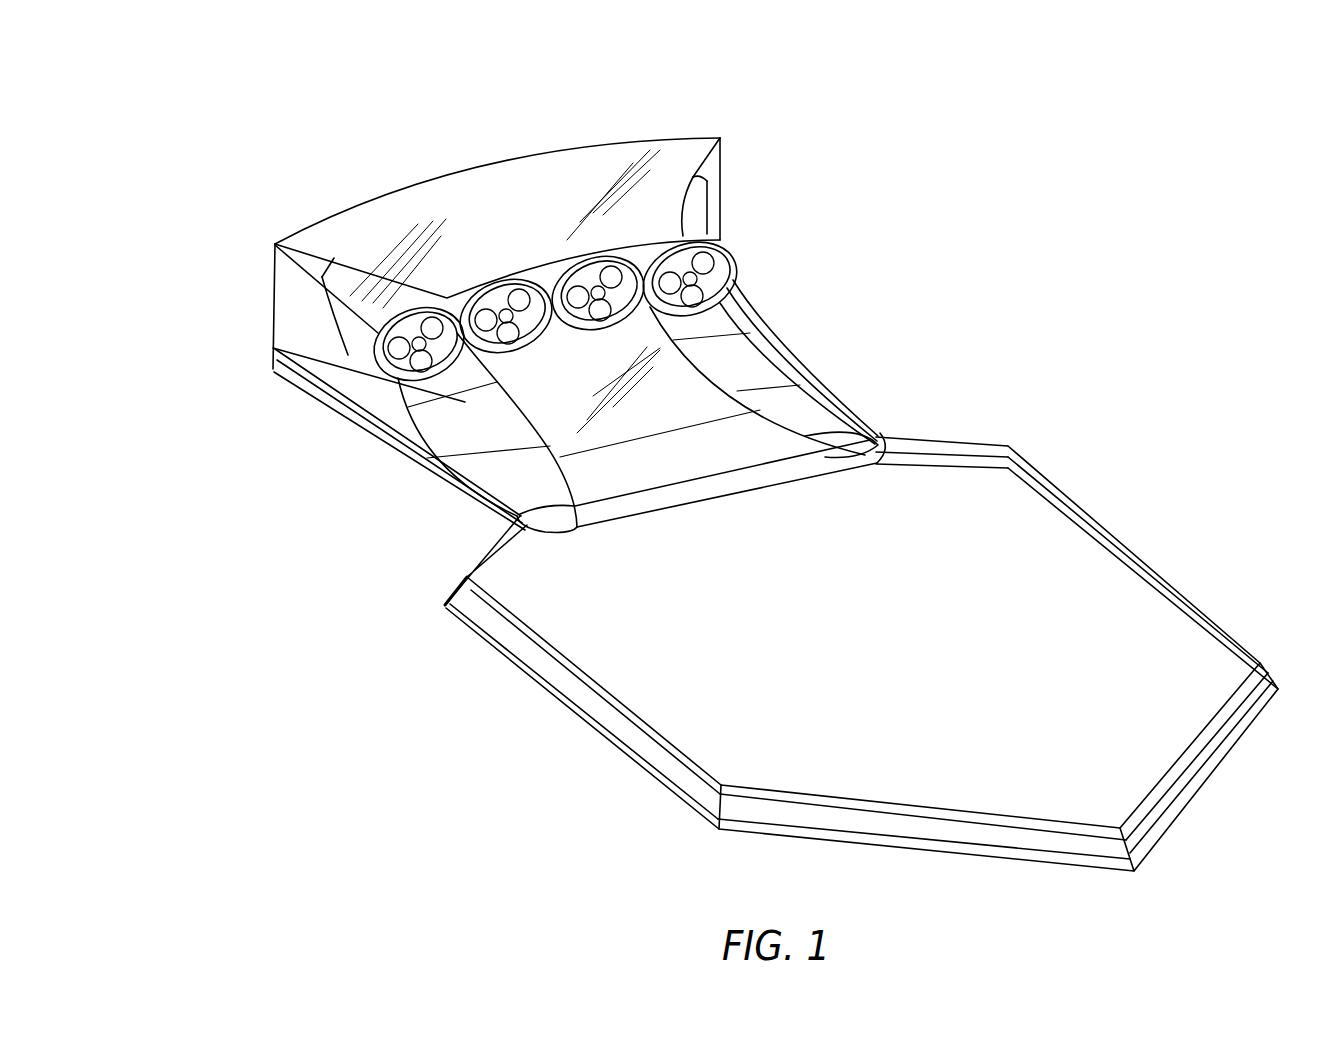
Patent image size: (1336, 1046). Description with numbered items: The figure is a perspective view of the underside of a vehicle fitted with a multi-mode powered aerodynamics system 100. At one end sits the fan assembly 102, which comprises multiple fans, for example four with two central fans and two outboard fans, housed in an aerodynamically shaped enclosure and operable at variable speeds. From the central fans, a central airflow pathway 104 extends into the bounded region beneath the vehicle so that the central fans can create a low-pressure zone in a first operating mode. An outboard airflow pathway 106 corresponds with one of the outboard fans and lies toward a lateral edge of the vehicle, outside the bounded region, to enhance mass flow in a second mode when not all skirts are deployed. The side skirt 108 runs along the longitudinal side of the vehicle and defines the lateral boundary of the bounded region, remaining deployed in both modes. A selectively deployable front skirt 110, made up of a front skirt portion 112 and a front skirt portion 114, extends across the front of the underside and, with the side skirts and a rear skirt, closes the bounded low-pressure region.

The system 100 is at (194, 110).
The fan assembly 102 is at (541, 264).
The central airflow pathway 104 is at (700, 514).
The outboard airflow pathway 106 is at (441, 474).
The side skirt 108 is at (612, 686).
The front skirt 110 is at (1080, 787).
The front skirt portion 112 is at (944, 804).
The front skirt portion 114 is at (1192, 742).